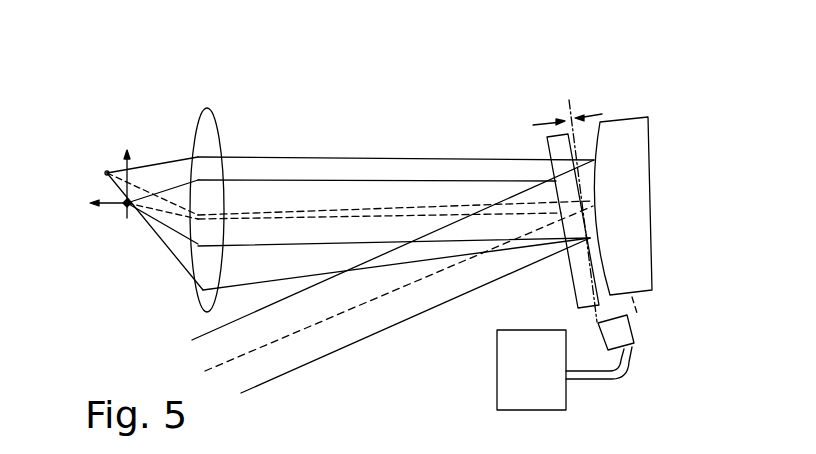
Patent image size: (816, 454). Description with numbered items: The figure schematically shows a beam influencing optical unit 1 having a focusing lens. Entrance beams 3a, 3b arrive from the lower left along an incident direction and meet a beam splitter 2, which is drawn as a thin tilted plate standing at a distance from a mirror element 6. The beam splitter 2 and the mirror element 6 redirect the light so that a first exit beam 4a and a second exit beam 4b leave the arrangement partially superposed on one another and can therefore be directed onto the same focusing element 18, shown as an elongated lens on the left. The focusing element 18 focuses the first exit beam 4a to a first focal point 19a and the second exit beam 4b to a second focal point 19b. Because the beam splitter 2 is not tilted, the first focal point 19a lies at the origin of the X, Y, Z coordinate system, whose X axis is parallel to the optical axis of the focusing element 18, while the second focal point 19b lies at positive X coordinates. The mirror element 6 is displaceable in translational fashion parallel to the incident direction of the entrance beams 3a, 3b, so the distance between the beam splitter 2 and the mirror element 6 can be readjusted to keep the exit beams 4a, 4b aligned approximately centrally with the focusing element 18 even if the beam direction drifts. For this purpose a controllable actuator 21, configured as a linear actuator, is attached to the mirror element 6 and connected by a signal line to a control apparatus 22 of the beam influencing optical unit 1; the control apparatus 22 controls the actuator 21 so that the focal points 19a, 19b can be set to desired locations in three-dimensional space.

The beam influencing optical unit 1 is at (425, 99).
The beam splitter 2 is at (555, 148).
The entrance beam 3a is at (399, 301).
The entrance beam 3b is at (382, 312).
The first exit beam 4a is at (300, 247).
The second exit beam 4b is at (308, 157).
The mirror element 6 is at (623, 124).
The focusing element 18 is at (205, 123).
The first focal point 19a is at (127, 207).
The second focal point 19b is at (107, 173).
The controllable actuator 21 is at (618, 332).
The control apparatus 22 is at (538, 390).